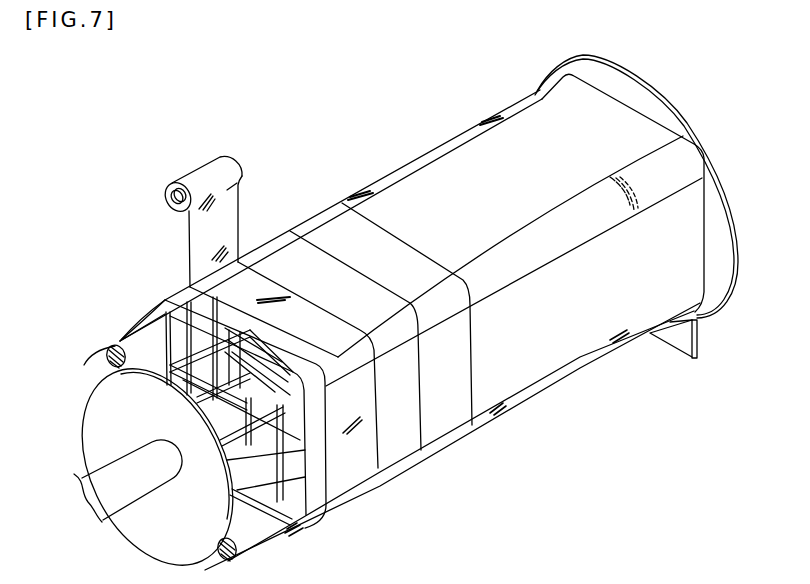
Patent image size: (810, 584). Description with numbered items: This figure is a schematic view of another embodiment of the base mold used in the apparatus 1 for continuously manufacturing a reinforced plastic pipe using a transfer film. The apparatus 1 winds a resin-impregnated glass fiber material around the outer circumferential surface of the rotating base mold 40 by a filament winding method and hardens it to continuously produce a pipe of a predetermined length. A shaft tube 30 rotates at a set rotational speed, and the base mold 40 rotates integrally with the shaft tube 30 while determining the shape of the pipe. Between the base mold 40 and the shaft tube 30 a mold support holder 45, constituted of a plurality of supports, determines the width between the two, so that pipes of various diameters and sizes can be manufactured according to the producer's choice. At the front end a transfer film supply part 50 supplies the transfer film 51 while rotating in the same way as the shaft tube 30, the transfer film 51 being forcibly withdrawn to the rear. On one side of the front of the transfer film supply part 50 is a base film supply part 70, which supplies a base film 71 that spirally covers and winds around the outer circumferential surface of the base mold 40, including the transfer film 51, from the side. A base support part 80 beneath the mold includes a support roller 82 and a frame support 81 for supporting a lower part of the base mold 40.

The apparatus for continuously manufacturing a reinforced plastic pipe using a trans 1 is at (102, 142).
The shaft tube 30 is at (113, 463).
The base mold 40 is at (405, 152).
The mold support holder 45 is at (310, 470).
The transfer film supply part 50 is at (97, 362).
The transfer film 51 is at (140, 323).
The base film supply part 70 is at (208, 168).
The base film 71 is at (231, 210).
The base support part 80 is at (668, 356).
The frame support 81 is at (687, 345).
The support roller 82 is at (697, 323).